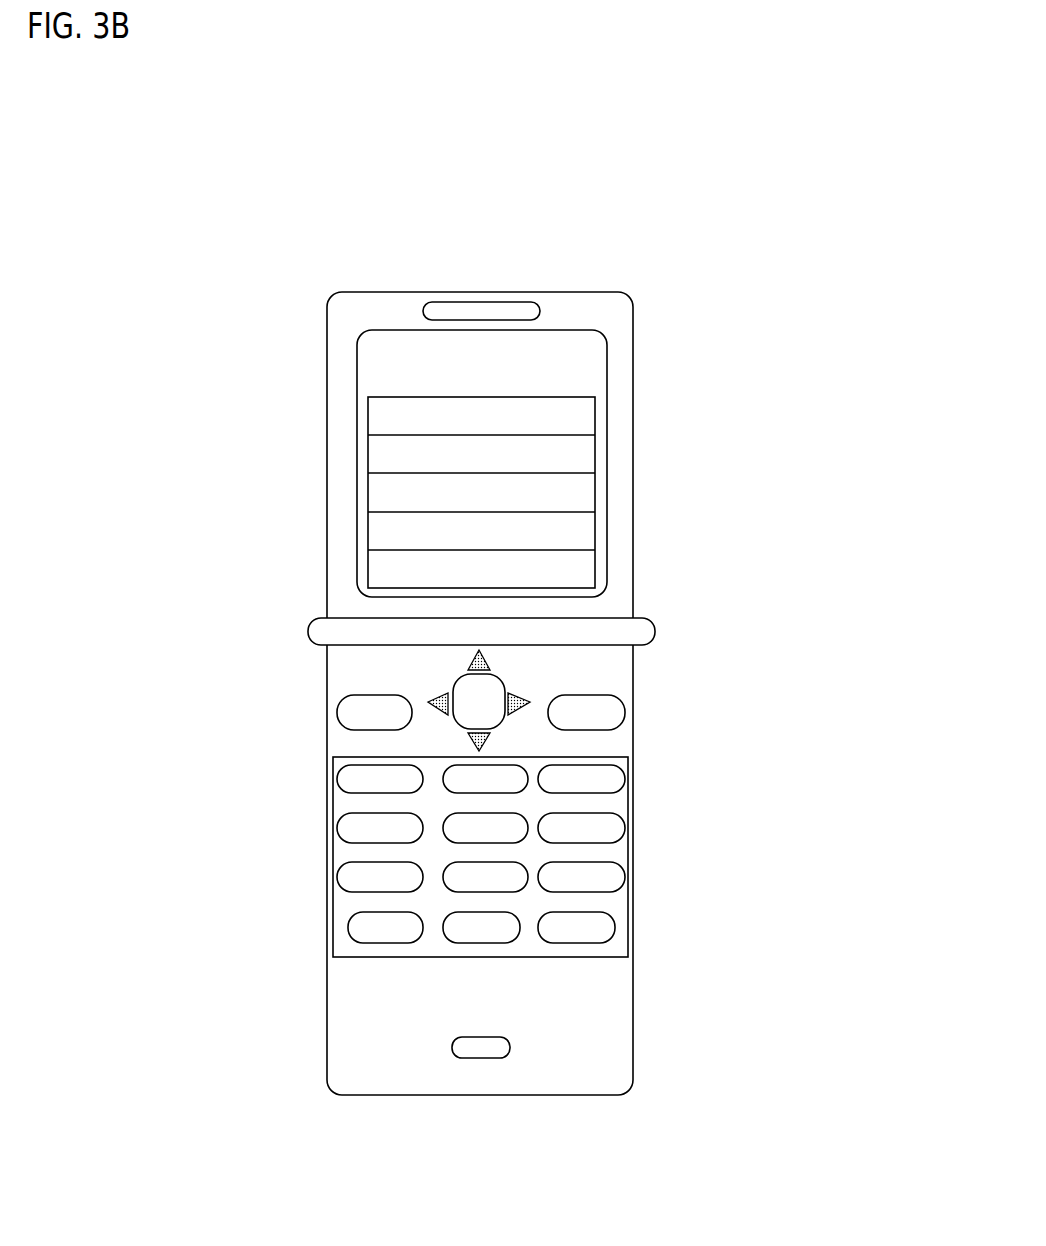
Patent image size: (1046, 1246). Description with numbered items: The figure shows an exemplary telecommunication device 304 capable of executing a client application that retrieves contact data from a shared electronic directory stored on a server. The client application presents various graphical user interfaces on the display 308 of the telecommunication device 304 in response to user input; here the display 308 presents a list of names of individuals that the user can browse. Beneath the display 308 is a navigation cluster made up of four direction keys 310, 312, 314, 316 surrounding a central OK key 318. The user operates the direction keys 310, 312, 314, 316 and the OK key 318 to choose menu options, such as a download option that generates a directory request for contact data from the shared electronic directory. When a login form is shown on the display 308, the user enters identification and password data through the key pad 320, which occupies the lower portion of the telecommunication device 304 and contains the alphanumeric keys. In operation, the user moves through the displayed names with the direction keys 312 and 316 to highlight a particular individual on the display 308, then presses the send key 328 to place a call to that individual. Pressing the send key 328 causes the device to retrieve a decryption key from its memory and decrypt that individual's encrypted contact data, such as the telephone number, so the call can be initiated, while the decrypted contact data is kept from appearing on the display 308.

The telecommunication device 304 is at (773, 274).
The display 308 is at (541, 449).
The direction key 310 is at (612, 679).
The direction key 312 is at (585, 745).
The direction key 314 is at (357, 728).
The direction key 316 is at (592, 621).
The OK key 318 is at (344, 690).
The key pad 320 is at (543, 857).
The send key 328 is at (270, 708).